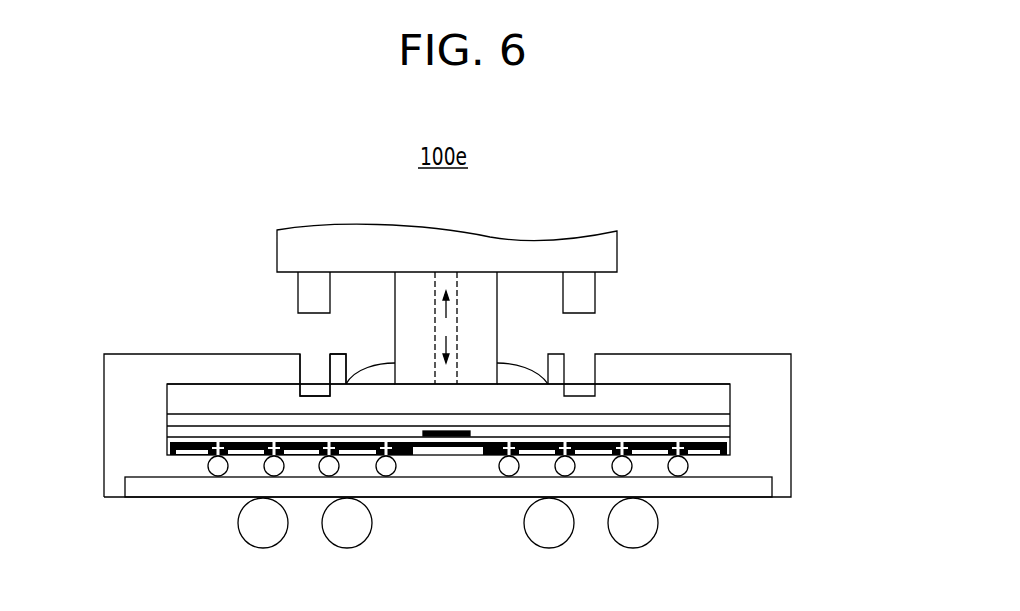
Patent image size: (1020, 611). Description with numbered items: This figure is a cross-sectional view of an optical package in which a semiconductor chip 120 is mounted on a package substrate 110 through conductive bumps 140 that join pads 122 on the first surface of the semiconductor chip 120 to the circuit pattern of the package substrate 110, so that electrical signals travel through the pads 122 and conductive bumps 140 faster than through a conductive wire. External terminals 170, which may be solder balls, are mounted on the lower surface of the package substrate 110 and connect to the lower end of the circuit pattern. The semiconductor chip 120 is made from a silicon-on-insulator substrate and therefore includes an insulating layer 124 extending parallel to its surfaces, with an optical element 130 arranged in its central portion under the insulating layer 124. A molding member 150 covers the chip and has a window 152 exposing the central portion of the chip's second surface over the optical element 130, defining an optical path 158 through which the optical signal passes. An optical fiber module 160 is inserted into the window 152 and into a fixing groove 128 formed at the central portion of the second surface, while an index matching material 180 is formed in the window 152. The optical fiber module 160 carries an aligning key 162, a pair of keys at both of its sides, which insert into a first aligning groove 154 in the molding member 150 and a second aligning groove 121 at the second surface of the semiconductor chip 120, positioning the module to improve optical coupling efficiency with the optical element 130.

The package substrate 110 is at (767, 488).
The semiconductor chip 120 is at (722, 397).
The second aligning groove 121 is at (300, 377).
The pads 122 is at (172, 442).
The insulating layer 124 is at (722, 422).
The fixing groove 128 is at (470, 388).
The optical element 130 is at (447, 440).
The conductive bumps 140 is at (688, 470).
The molding member 150 is at (778, 370).
The window 152 is at (518, 356).
The first aligning groove 154 is at (317, 366).
The optical path 158 is at (445, 320).
The optical fiber module 160 is at (498, 294).
The aligning key 162 is at (586, 295).
The external terminals 170 is at (642, 528).
The index matching material 180 is at (380, 376).